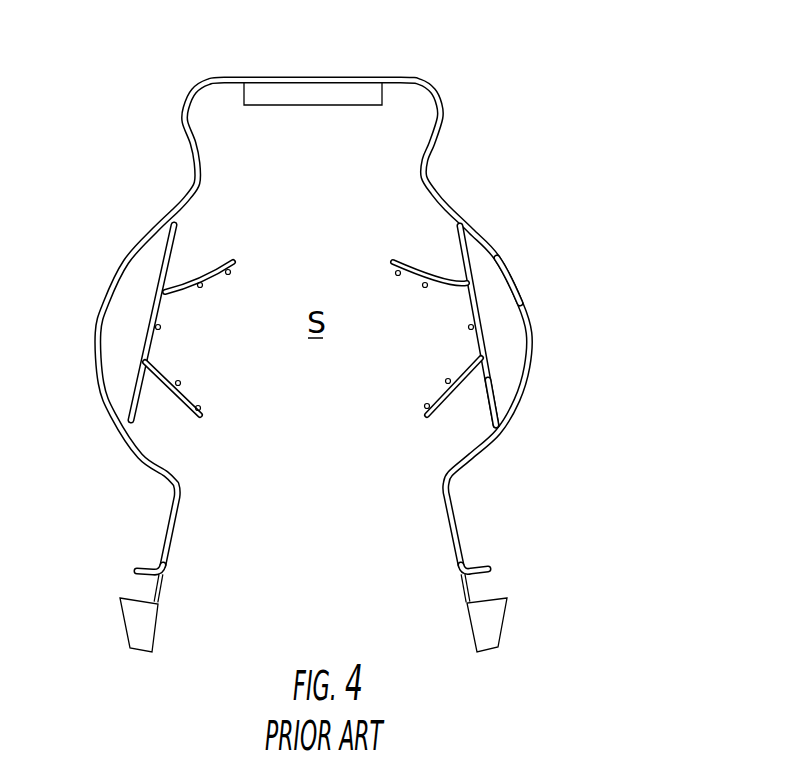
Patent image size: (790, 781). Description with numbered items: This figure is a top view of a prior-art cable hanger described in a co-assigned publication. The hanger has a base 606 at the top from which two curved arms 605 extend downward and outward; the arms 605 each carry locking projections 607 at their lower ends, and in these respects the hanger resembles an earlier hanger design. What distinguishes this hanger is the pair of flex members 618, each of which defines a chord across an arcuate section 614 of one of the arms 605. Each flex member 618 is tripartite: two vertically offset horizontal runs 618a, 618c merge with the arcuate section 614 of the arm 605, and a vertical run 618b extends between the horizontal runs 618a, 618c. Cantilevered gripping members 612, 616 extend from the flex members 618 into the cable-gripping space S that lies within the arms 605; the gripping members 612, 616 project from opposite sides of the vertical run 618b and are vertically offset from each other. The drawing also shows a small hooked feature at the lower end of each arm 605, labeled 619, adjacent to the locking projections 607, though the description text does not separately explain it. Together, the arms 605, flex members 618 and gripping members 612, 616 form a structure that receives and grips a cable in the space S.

The curved arms 605 is at (453, 207).
The base 606 is at (403, 80).
The locking projections 607 is at (493, 622).
The cantilevered gripping member 612 is at (418, 270).
The arcuate sections 614 is at (566, 280).
The cantilevered gripping member 616 is at (442, 403).
The flex members 618 is at (509, 316).
The horizontal run 618a is at (468, 281).
The vertical run 618b is at (478, 333).
The horizontal run 618c is at (492, 388).
The hook 619 is at (493, 567).